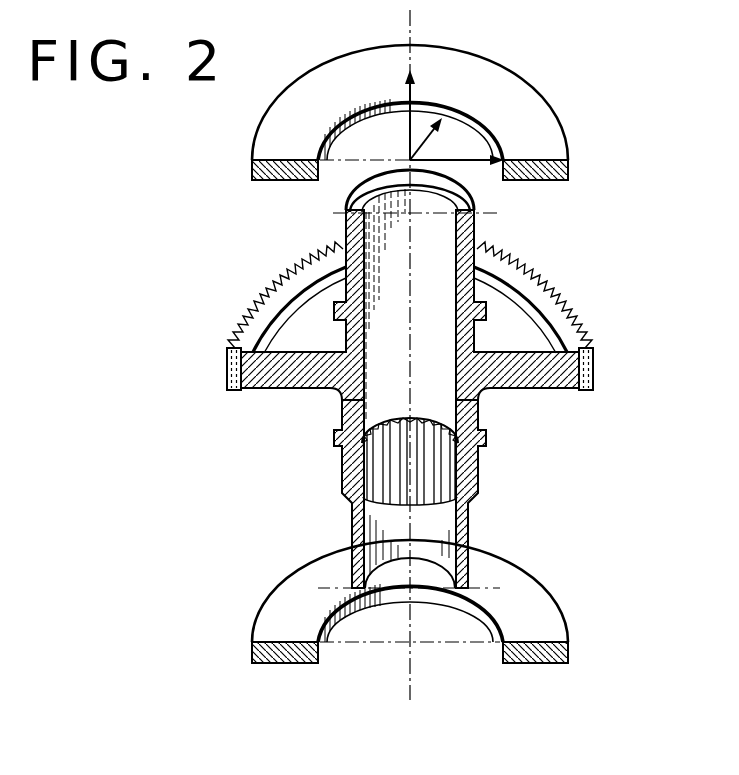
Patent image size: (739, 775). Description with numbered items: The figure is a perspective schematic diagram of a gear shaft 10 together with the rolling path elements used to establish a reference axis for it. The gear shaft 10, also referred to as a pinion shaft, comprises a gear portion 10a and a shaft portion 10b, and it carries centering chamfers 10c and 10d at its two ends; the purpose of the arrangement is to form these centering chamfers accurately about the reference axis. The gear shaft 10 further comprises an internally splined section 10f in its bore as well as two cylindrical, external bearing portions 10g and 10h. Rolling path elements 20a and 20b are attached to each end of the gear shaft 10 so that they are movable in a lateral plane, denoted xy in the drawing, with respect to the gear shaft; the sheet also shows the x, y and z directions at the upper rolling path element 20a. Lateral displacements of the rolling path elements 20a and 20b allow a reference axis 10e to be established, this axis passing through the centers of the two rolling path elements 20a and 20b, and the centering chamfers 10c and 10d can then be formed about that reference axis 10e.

The gear shaft 10 is at (433, 446).
The gear portion 10a is at (576, 356).
The shaft portion 10b is at (476, 336).
The centering chamfer 10c is at (410, 213).
The centering chamfer 10d is at (427, 560).
The reference axis 10e is at (407, 658).
The internally splined section 10f is at (352, 503).
The external bearing portion 10g is at (328, 296).
The external bearing portion 10h is at (328, 470).
The rolling path element 20a is at (570, 170).
The rolling path element 20b is at (543, 663).